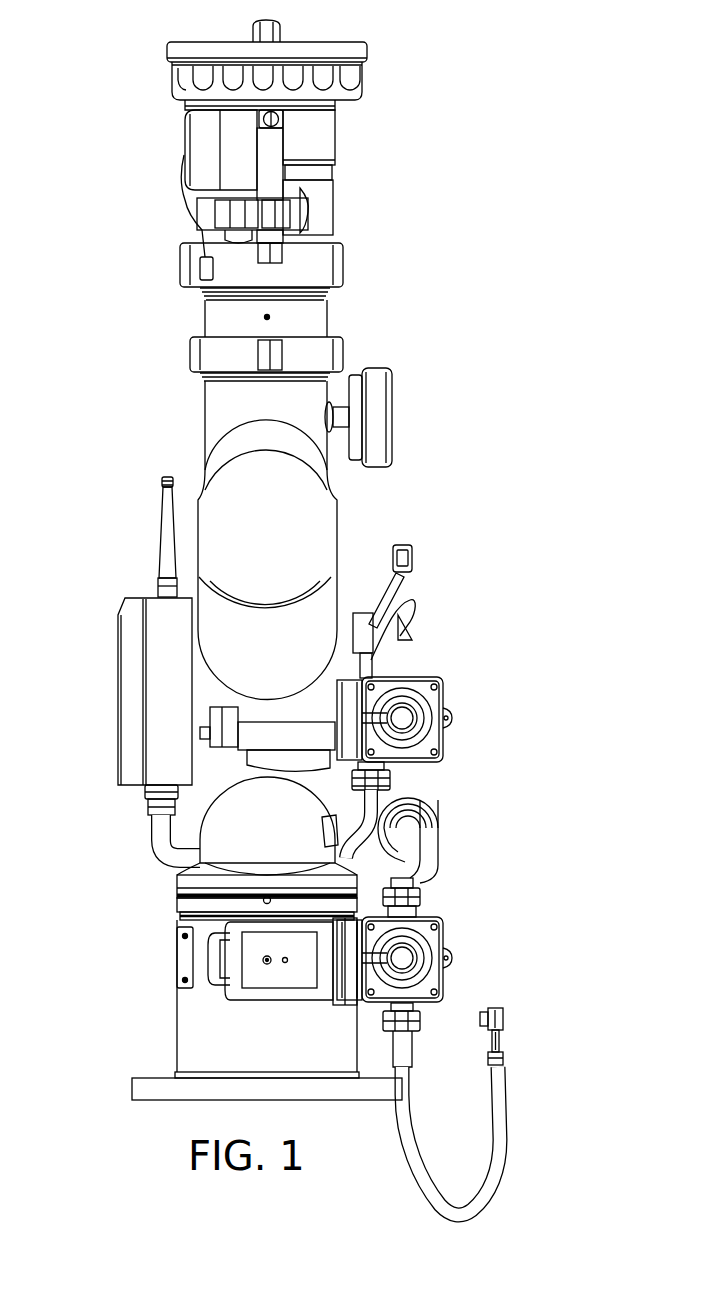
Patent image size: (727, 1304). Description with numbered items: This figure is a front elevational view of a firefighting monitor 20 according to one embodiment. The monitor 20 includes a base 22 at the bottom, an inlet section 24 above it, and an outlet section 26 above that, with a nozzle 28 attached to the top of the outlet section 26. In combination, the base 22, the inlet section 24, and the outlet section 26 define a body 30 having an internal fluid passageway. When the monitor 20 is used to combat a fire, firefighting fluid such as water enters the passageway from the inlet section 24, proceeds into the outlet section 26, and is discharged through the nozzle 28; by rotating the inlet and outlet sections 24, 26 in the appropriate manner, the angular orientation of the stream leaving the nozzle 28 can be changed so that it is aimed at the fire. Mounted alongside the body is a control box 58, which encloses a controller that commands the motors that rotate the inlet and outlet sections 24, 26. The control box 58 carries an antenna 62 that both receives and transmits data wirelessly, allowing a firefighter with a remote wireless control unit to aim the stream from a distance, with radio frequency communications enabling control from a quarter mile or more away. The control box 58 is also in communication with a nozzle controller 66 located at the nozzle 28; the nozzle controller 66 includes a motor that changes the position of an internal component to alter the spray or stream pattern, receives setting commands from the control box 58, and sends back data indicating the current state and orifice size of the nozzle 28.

The firefighting monitor 20 is at (465, 105).
The base 22 is at (191, 1030).
The inlet section 24 is at (225, 839).
The outlet section 26 is at (237, 479).
The nozzle 28 is at (166, 99).
The body 30 is at (501, 598).
The control box 58 is at (133, 712).
The antenna 62 is at (165, 560).
The nozzle controller 66 is at (179, 195).